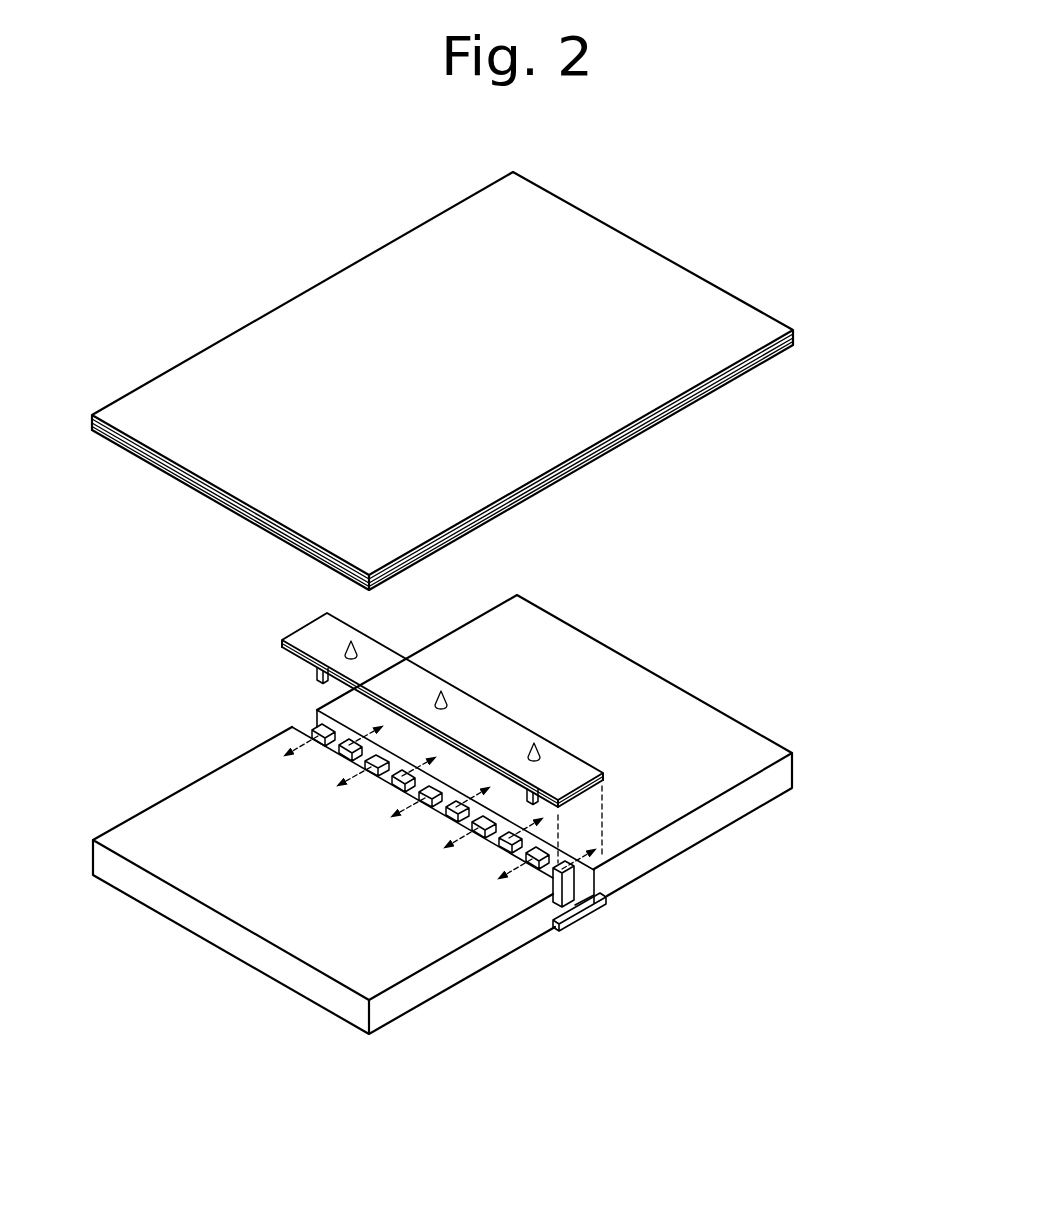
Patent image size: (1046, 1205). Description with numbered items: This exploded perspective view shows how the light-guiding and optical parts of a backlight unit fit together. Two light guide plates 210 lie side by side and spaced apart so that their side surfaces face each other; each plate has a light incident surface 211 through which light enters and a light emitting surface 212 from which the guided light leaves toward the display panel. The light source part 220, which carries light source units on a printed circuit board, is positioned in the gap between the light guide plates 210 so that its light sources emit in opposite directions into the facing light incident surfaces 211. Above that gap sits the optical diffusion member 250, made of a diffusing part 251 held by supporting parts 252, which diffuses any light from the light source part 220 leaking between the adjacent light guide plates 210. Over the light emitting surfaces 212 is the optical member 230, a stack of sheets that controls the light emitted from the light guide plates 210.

The light guide plate 210 is at (440, 806).
The light incident surface 211 is at (580, 888).
The light emitting surface 212 is at (210, 800).
The light source part 220 is at (590, 919).
The optical member 230 is at (202, 377).
The optical diffusion member 250 is at (369, 690).
The diffusing part 251 is at (320, 636).
The supporting part 252 is at (318, 676).